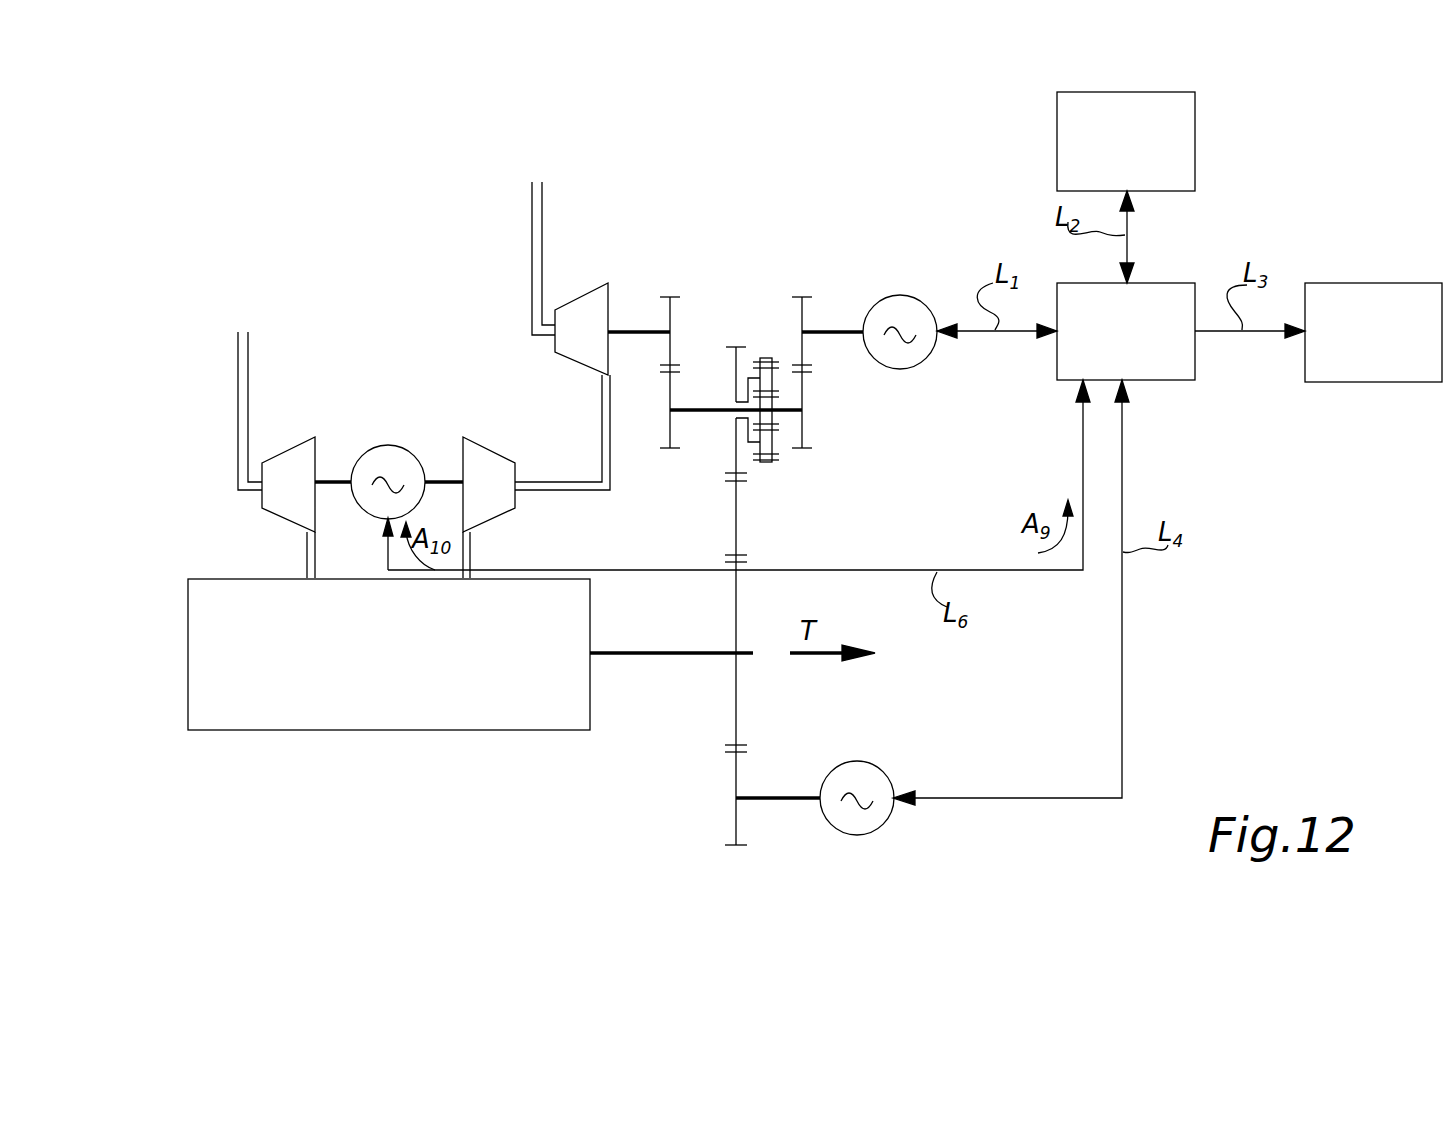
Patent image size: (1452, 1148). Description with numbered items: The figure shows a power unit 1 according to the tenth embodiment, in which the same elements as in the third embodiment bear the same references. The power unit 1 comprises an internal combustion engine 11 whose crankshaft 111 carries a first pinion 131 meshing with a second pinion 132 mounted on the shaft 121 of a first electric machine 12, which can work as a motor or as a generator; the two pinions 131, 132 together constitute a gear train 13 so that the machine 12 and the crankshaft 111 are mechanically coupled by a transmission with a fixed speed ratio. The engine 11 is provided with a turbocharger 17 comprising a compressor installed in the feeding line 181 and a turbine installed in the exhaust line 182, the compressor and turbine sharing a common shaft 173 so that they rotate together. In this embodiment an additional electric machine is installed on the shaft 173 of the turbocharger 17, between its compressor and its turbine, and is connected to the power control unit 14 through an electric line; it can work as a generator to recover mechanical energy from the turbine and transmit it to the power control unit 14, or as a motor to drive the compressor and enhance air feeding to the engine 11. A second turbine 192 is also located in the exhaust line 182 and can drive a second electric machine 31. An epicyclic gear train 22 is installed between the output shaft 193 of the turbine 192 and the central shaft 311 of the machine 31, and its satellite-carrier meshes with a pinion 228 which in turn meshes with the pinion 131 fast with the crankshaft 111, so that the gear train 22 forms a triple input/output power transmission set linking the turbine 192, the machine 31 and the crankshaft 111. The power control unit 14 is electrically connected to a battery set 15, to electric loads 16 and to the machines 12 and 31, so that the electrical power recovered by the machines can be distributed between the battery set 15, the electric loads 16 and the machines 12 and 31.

The power unit 1 is at (397, 246).
The internal combustion engine 11 is at (389, 654).
The first electric machine 12 is at (852, 773).
The gear train 13 is at (668, 780).
The first pinion 131 is at (735, 715).
The second pinion 132 is at (735, 826).
The power control unit 14 is at (1126, 331).
The battery set 15 is at (1126, 141).
The electric loads 16 is at (1373, 332).
The turbocharger 17 is at (277, 427).
The common shaft 173 is at (338, 485).
The feeding line 181 is at (238, 375).
The exhaust line 182 is at (603, 445).
The second turbine 192 is at (590, 310).
The output shaft 193 is at (640, 328).
The epicyclic gear train 22 is at (738, 342).
The pinion 228 is at (735, 533).
The second electric machine 31 is at (913, 348).
The central shaft 311 is at (827, 328).
The crankshaft 111 is at (672, 650).
The shaft 121 is at (790, 800).